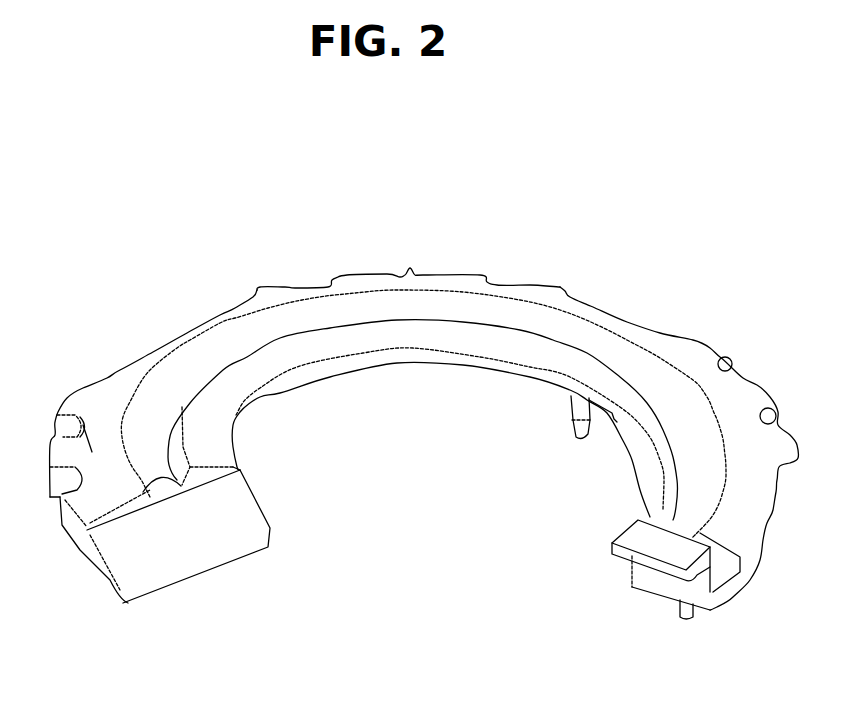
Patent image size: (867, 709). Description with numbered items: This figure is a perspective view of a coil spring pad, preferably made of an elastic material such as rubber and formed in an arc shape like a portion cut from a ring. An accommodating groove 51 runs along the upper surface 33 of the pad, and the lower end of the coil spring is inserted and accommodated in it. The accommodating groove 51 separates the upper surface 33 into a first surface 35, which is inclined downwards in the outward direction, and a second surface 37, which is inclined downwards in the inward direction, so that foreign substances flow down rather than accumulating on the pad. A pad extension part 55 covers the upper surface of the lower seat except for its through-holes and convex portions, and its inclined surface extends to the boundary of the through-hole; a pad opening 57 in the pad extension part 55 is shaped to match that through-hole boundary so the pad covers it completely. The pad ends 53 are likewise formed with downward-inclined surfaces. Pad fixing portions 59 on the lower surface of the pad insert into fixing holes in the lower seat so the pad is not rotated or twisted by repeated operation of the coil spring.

The upper surface 33 is at (123, 340).
The first surface 35 is at (82, 415).
The second surface 37 is at (197, 435).
The accommodating groove 51 is at (220, 343).
The pad ends 53 is at (183, 537).
The pad extension part 55 is at (253, 282).
The pad opening 57 is at (408, 272).
The pad fixing portions 59 is at (578, 439).